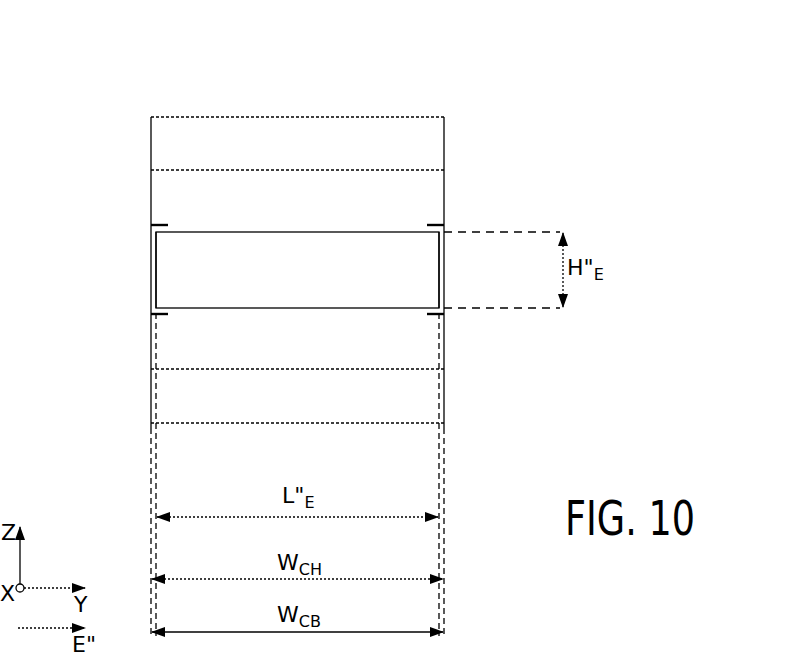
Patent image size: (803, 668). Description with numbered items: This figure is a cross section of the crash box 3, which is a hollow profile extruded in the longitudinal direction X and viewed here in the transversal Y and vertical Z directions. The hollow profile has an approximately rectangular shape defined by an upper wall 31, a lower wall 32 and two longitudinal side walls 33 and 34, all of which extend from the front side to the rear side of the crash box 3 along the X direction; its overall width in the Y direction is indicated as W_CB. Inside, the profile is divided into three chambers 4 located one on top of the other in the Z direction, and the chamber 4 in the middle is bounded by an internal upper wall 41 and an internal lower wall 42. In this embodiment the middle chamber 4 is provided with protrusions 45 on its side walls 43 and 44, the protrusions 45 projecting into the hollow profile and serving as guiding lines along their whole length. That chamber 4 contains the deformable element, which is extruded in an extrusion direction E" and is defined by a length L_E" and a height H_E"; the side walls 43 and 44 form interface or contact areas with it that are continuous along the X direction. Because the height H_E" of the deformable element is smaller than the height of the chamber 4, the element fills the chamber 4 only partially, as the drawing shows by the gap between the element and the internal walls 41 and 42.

The crash box 3 is at (168, 87).
The chamber 4 is at (200, 198).
The upper wall 31 is at (385, 116).
The lower wall 32 is at (354, 426).
The longitudinal side wall 33 is at (446, 390).
The longitudinal side wall 34 is at (149, 390).
The internal upper wall 41 is at (404, 169).
The internal lower wall 42 is at (187, 369).
The side wall of the chamber 43 is at (446, 282).
The side wall of the chamber 44 is at (150, 263).
The protrusion 45 is at (150, 225).